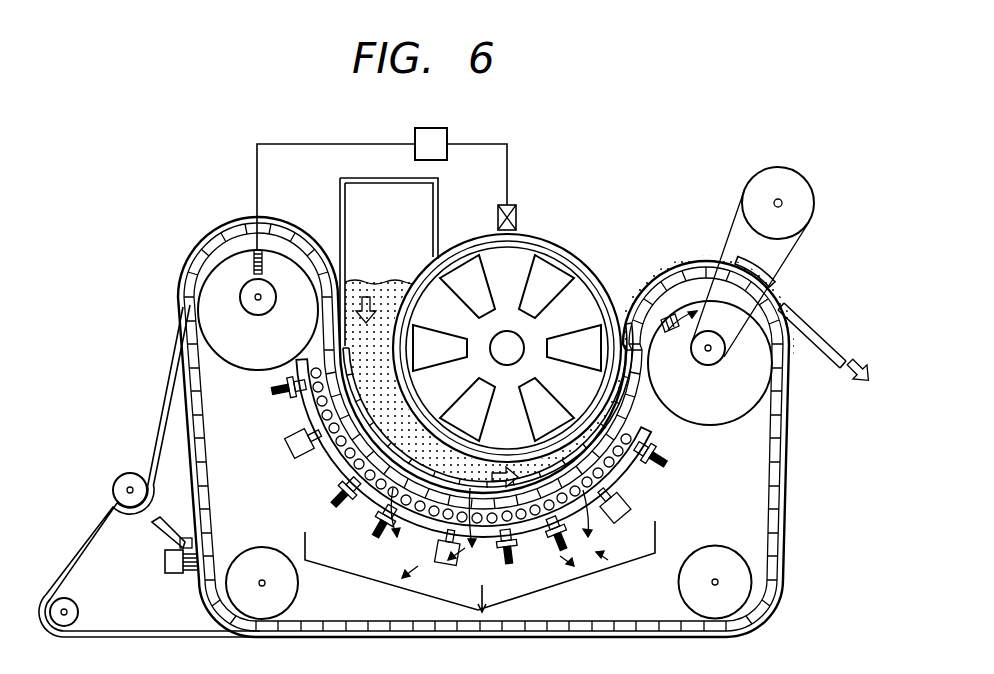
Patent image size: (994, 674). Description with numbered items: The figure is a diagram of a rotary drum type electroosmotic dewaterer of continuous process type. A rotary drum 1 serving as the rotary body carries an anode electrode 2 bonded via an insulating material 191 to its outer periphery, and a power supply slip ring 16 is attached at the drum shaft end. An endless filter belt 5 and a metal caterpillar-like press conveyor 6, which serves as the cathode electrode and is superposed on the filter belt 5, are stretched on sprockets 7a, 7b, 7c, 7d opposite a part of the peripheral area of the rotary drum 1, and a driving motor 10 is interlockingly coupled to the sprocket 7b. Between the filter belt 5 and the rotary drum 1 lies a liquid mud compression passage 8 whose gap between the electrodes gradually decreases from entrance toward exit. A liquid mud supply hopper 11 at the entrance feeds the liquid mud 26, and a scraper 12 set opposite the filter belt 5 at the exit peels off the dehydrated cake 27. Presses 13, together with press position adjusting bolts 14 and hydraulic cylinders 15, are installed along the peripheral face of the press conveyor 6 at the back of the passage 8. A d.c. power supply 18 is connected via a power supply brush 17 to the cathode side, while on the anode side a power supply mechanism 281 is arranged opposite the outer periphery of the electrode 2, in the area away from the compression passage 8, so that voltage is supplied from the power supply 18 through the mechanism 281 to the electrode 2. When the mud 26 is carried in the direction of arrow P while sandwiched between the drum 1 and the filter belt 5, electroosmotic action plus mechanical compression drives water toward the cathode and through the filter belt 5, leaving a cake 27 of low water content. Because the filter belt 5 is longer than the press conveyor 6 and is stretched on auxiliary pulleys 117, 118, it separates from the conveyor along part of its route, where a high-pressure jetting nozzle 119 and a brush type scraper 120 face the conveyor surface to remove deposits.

The rotary drum 1 is at (612, 300).
The anode electrode 2 is at (583, 252).
The insulating material 191 is at (528, 248).
The power supply slip ring 16 is at (515, 346).
The direction of liquid mud carriage P is at (505, 465).
The liquid mud supply hopper 11 is at (352, 200).
The liquid mud 26 is at (376, 282).
The d.c. power supply 18 is at (447, 134).
The power supply mechanism 281 is at (514, 205).
The power supply brush 17 is at (262, 258).
The filter belt 5 is at (785, 492).
The press conveyor 6 is at (770, 530).
The sprocket 7a is at (248, 360).
The sprocket 7b is at (735, 410).
The sprocket 7c is at (262, 548).
The sprocket 7d is at (722, 548).
The liquid mud compression passage 8 is at (353, 382).
The press 13 is at (640, 470).
The press position adjusting bolt 14 is at (668, 460).
The hydraulic cylinder 15 is at (632, 512).
The driving motor 10 is at (812, 203).
The scraper 12 is at (815, 356).
The dehydrated cake 27 is at (836, 336).
The auxiliary pulley 118 is at (130, 472).
The auxiliary pulley 117 is at (80, 612).
The high-pressure jetting nozzle 119 is at (165, 530).
The brush type scraper 120 is at (165, 568).